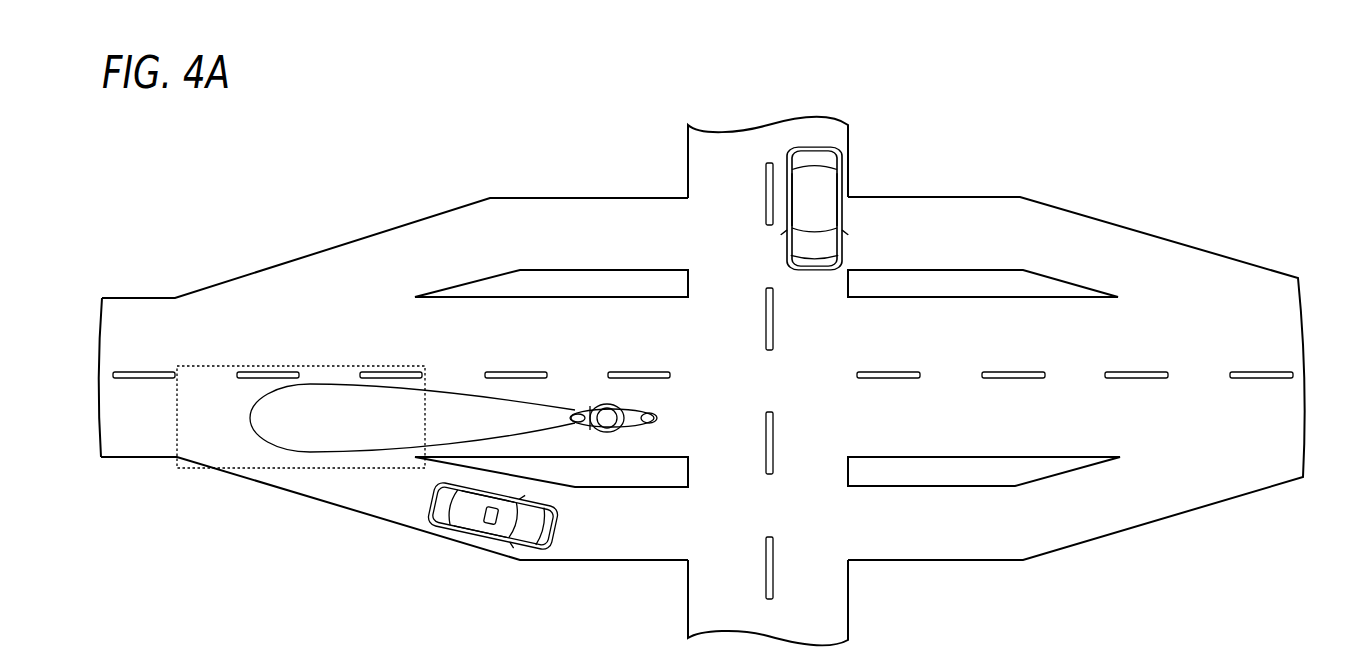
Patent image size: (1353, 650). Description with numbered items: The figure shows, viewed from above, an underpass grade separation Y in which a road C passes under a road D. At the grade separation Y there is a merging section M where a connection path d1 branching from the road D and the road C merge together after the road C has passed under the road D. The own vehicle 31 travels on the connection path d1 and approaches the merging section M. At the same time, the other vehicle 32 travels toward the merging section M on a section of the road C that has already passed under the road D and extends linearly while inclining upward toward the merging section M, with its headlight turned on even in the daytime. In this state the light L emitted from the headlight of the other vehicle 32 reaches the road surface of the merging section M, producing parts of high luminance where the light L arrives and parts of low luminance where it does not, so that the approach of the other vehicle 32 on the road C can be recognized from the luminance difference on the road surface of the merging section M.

The own vehicle 31 is at (487, 533).
The other vehicle 32 is at (630, 402).
The road C is at (566, 395).
The road D is at (823, 600).
The light L is at (325, 407).
The merging section M is at (292, 472).
The underpass grade separation Y is at (882, 178).
The connection path d1 is at (615, 540).